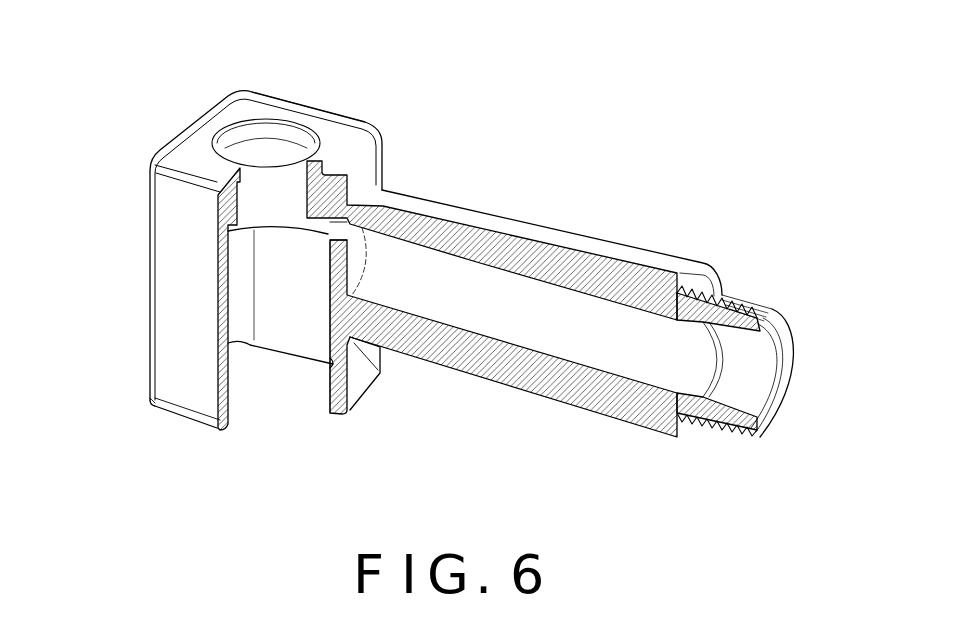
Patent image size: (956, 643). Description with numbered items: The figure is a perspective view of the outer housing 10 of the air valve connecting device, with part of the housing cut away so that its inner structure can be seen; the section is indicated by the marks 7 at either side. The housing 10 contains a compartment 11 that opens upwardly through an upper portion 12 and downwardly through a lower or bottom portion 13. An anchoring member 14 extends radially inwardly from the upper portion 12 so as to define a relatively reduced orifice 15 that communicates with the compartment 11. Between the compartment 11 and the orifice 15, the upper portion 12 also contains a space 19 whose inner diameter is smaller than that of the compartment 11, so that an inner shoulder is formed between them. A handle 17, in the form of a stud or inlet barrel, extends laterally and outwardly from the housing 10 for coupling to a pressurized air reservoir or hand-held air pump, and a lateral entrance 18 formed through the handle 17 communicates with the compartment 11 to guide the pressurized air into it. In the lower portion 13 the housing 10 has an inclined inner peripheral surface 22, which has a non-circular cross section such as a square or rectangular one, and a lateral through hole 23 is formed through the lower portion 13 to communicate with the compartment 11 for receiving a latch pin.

The section line 7- 7 is at (140, 210).
The head body or outer housing 10 is at (345, 130).
The compartment 11 is at (265, 207).
The upper portion 12 is at (183, 133).
The lower or bottom portion 13 is at (153, 405).
The anchoring member 14 is at (243, 106).
The orifice 15 is at (279, 122).
The handle 17 is at (545, 230).
The lateral orifice or entrance 18 is at (345, 232).
The space 19 is at (295, 152).
The inclined inner peripheral surface 22 is at (298, 328).
The lateral through hole 23 is at (333, 363).